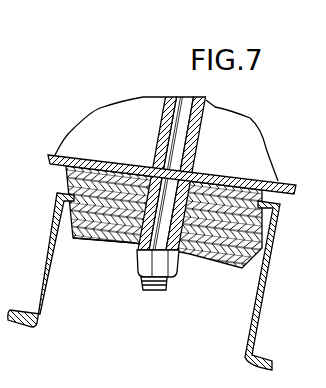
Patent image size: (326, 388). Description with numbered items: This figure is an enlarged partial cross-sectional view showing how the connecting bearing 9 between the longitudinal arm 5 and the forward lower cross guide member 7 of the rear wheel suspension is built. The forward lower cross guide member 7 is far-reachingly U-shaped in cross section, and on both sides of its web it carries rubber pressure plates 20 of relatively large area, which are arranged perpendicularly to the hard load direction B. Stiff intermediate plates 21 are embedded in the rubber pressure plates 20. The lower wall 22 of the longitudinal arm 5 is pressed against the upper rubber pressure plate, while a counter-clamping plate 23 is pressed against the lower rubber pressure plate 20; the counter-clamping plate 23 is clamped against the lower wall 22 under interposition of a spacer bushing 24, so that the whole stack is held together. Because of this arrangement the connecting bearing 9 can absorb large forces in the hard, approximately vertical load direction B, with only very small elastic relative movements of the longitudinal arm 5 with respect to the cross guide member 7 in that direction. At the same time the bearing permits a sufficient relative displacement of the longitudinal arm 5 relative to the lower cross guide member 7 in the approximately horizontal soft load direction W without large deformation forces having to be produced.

The longitudinal arm 5 is at (110, 130).
The forward lower cross guide member 7 is at (50, 260).
The connecting bearing 9 is at (60, 179).
The rubber pressure plates 20 is at (265, 228).
The stiff intermediate plates 21 is at (92, 236).
The lower wall of the longitudinal arm 22 is at (289, 188).
The counter-clamping plate 23 is at (195, 250).
The spacer bushing 24 is at (170, 276).
The hard load direction B is at (218, 122).
The soft load direction W is at (274, 182).